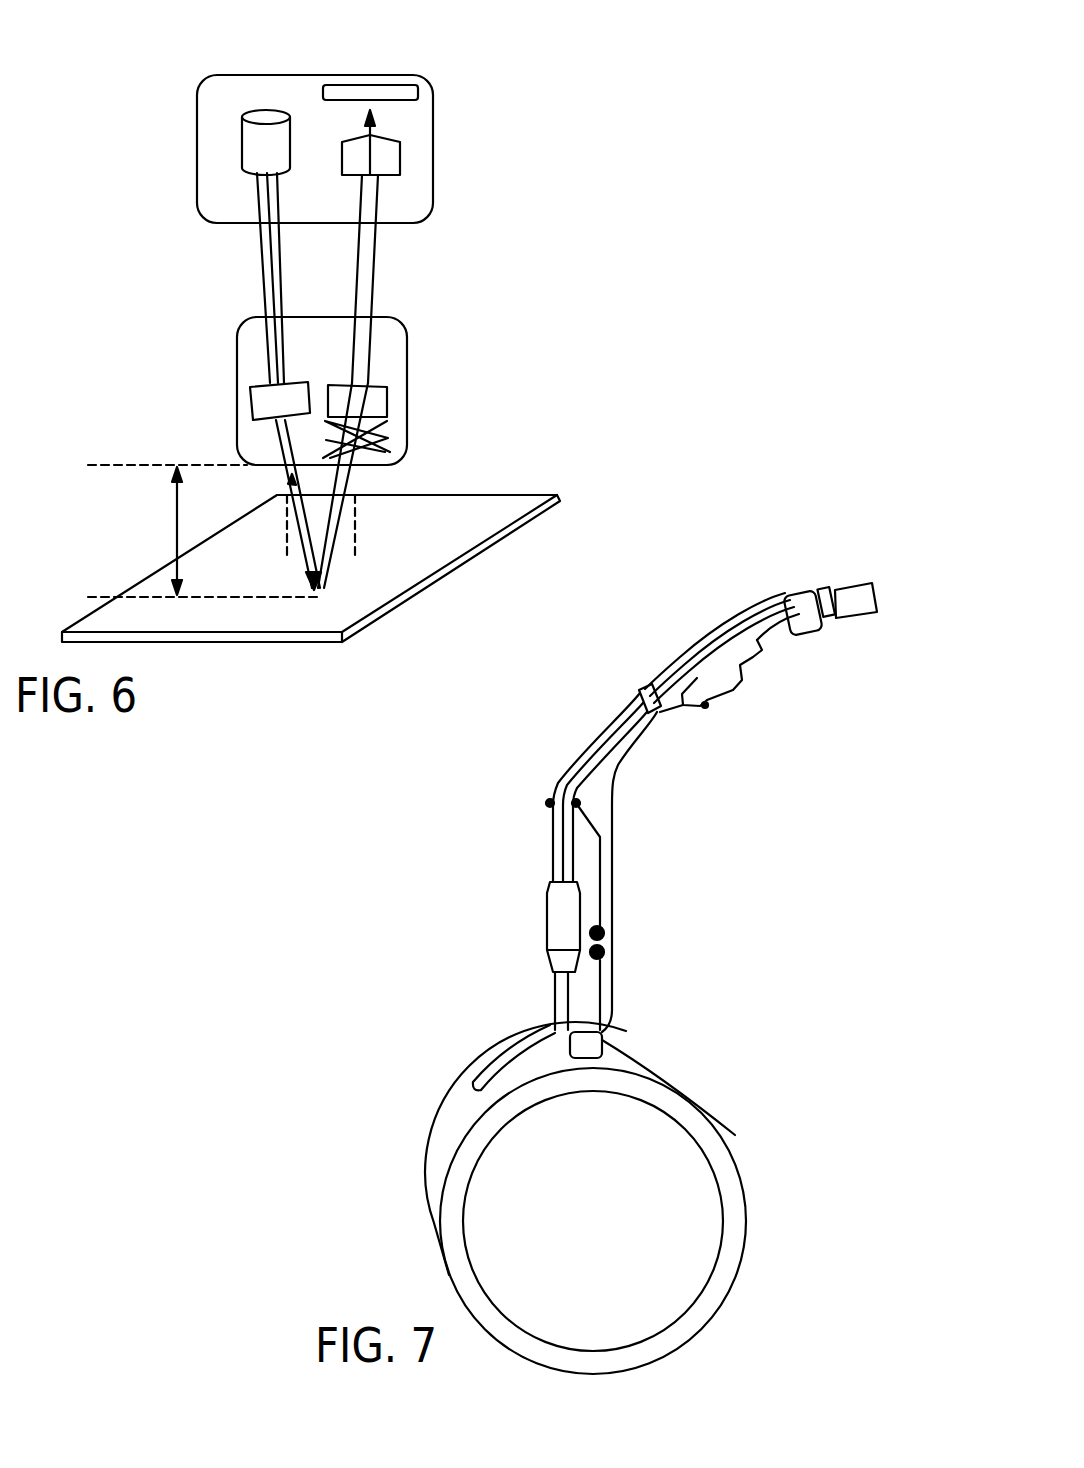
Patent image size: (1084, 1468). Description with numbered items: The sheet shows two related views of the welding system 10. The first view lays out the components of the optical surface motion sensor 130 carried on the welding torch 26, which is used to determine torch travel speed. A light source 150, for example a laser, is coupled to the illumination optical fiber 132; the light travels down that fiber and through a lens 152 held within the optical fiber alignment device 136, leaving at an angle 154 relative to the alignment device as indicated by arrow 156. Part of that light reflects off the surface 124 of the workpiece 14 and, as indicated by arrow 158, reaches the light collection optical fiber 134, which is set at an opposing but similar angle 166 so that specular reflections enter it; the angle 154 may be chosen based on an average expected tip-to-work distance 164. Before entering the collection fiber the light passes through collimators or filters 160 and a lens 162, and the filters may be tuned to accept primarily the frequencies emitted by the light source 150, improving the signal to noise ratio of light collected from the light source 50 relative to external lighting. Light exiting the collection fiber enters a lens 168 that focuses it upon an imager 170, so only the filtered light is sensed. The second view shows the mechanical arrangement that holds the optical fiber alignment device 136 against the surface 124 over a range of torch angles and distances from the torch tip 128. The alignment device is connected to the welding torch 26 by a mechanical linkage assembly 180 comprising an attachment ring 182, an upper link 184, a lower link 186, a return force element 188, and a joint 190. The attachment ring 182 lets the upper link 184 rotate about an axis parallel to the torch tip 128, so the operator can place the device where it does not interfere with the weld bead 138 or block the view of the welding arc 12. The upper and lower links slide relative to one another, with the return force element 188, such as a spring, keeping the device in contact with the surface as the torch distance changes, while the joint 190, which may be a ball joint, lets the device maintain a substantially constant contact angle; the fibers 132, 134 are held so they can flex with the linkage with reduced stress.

In FIG. 7, the welding system 10 is at (553, 660).
In FIG. 7, the welding arc 12 is at (553, 1001).
In FIG. 6, the workpiece 14 is at (200, 643).
In FIG. 7, the workpiece 14 is at (750, 1222).
In FIG. 7, the welding torch 26 is at (745, 612).
In FIG. 6, the light source 50 is at (100, 165).
In FIG. 6, the surface 124 is at (480, 531).
In FIG. 7, the surface 124 is at (440, 1115).
In FIG. 7, the torch tip 128 is at (547, 921).
In FIG. 6, the optical surface motion sensor 130 is at (433, 150).
In FIG. 6, the illumination optical fiber 132 is at (258, 263).
In FIG. 7, the illumination optical fiber 132 is at (572, 746).
In FIG. 6, the light collection optical fiber 134 is at (380, 262).
In FIG. 7, the light collection optical fiber 134 is at (620, 760).
In FIG. 6, the optical fiber alignment device 136 is at (312, 317).
In FIG. 7, the optical fiber alignment device 136 is at (645, 1056).
In FIG. 7, the weld bead 138 is at (495, 1052).
In FIG. 6, the light source 150 is at (242, 138).
In FIG. 6, the lens 152 is at (252, 405).
In FIG. 6, the angle 154 is at (287, 558).
In FIG. 6, the arrow 156 is at (290, 483).
In FIG. 6, the arrow 158 is at (356, 473).
In FIG. 6, the filters 160 is at (395, 448).
In FIG. 6, the lens 162 is at (387, 405).
In FIG. 6, the tip-to-work distance 164 is at (175, 527).
In FIG. 6, the angle 166 is at (355, 555).
In FIG. 6, the lens 168 is at (400, 160).
In FIG. 6, the imager 170 is at (372, 86).
In FIG. 7, the mechanical linkage assembly 180 is at (797, 838).
In FIG. 7, the attachment ring 182 is at (547, 805).
In FIG. 7, the upper link 184 is at (604, 880).
In FIG. 7, the lower link 186 is at (612, 1003).
In FIG. 7, the return force element 188 is at (610, 958).
In FIG. 7, the joint 190 is at (605, 1040).